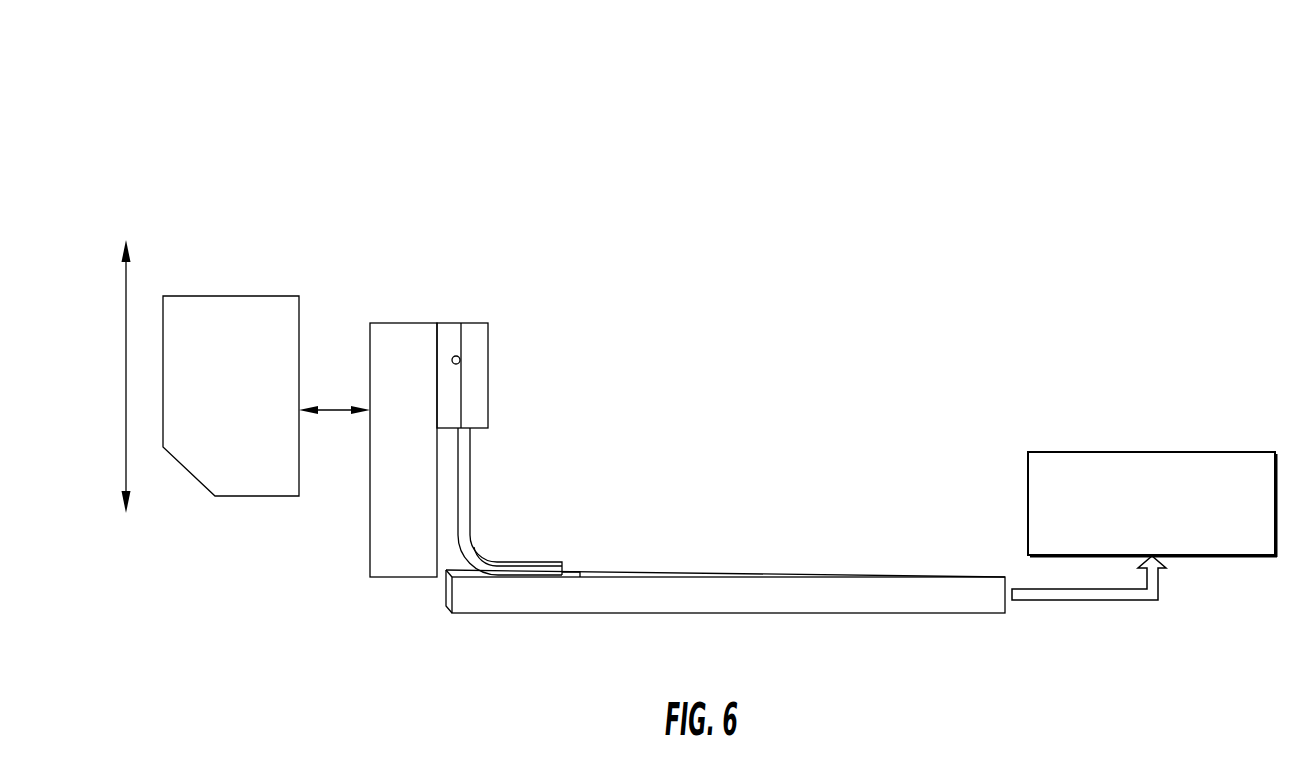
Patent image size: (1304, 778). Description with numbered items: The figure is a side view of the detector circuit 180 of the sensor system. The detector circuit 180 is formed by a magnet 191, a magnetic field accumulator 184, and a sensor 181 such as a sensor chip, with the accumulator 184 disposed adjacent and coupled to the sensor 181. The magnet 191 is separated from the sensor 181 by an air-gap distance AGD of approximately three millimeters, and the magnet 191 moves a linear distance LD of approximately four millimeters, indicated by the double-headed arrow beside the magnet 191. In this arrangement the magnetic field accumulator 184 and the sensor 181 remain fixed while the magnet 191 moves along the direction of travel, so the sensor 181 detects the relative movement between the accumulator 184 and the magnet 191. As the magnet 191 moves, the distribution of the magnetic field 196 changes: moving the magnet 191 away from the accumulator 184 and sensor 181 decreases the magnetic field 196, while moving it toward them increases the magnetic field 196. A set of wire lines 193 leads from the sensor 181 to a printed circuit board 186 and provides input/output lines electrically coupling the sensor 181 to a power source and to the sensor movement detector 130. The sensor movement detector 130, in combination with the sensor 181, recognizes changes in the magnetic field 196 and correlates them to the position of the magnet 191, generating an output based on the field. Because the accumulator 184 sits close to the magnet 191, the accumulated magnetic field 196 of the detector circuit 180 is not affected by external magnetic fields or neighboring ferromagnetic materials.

The detector circuit 180 is at (631, 114).
The magnet 191 is at (263, 297).
The linear distance LD is at (126, 362).
The air-gap distance AGD is at (338, 410).
The magnetic field accumulator 184 is at (410, 325).
The sensor 181 is at (476, 325).
The wire lines 193 is at (537, 563).
The printed circuit board 186 is at (983, 582).
The sensor movement detector 130 is at (1168, 527).
The magnetic field 196 is at (334, 530).